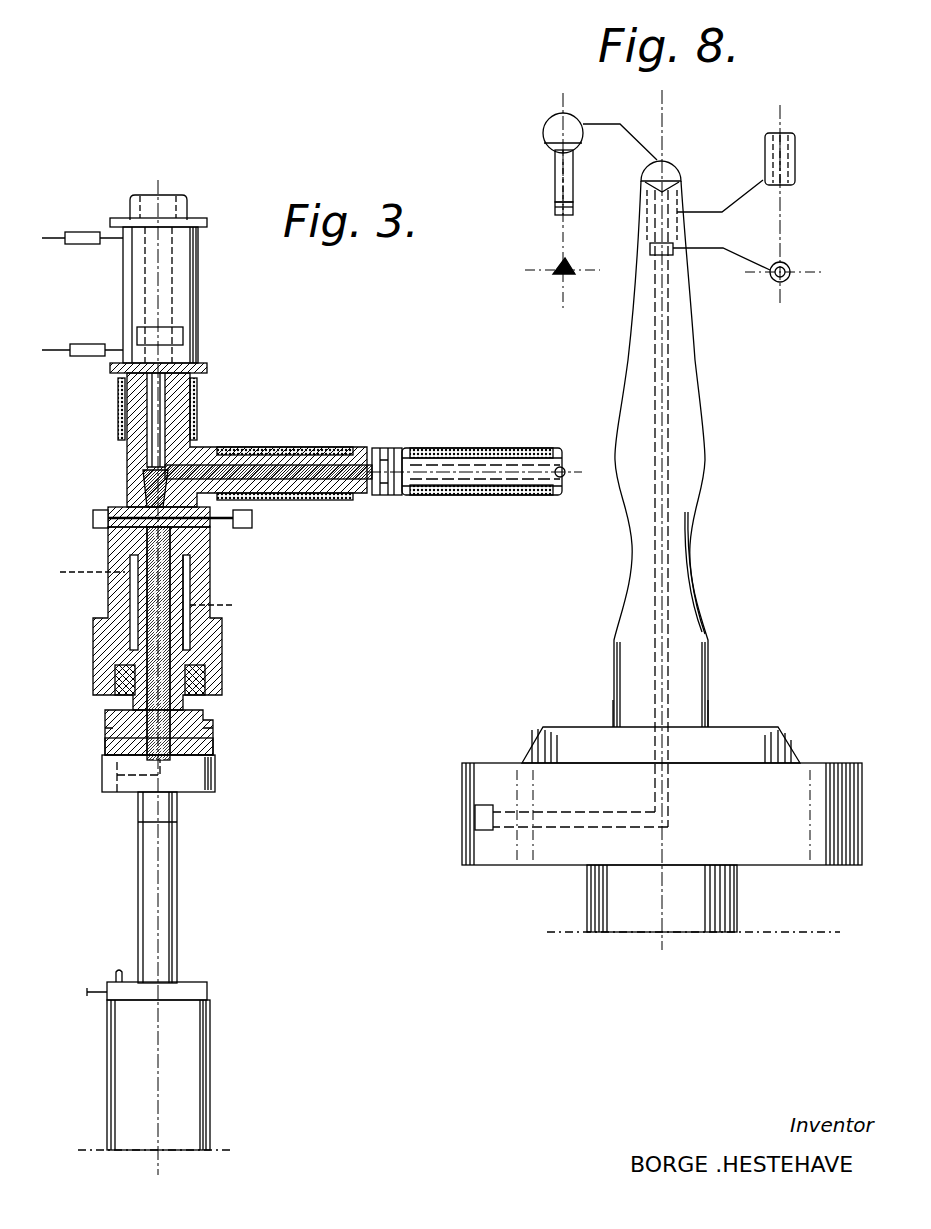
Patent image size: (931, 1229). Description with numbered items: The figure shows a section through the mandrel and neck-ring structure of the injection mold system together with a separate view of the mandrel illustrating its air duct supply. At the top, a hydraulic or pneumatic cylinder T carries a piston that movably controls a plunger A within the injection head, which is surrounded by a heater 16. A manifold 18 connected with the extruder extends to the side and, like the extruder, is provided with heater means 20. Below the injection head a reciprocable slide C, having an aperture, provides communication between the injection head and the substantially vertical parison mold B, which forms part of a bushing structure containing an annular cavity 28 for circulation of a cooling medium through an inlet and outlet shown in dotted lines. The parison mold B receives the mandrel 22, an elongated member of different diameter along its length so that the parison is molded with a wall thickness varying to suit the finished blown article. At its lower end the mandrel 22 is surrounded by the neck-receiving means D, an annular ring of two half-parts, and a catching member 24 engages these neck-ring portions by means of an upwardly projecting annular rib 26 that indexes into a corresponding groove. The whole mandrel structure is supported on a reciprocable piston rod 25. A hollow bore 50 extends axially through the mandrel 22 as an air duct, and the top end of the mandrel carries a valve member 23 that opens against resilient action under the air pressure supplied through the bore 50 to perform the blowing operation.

In FIG. 3, the cylinder T is at (198, 297).
In FIG. 3, the heater 16 is at (199, 405).
In FIG. 3, the manifold 18 is at (377, 450).
In FIG. 3, the heater means 20 is at (417, 500).
In FIG. 3, the mandrel 22 is at (176, 627).
In FIG. 8, the mandrel 22 is at (688, 372).
In FIG. 8, the valve member 23 is at (665, 166).
In FIG. 3, the catching member 24 is at (213, 784).
In FIG. 8, the catching member 24 is at (855, 808).
In FIG. 3, the piston rod 25 is at (177, 868).
In FIG. 3, the annular rib 26 is at (212, 740).
In FIG. 8, the annular rib 26 is at (781, 735).
In FIG. 3, the annular cavity 28 is at (188, 583).
In FIG. 8, the hollow bore 50 is at (663, 425).
In FIG. 3, the plunger A is at (152, 460).
In FIG. 3, the parison mold B is at (138, 603).
In FIG. 3, the slide C is at (93, 520).
In FIG. 3, the neck-receiving means D is at (104, 720).